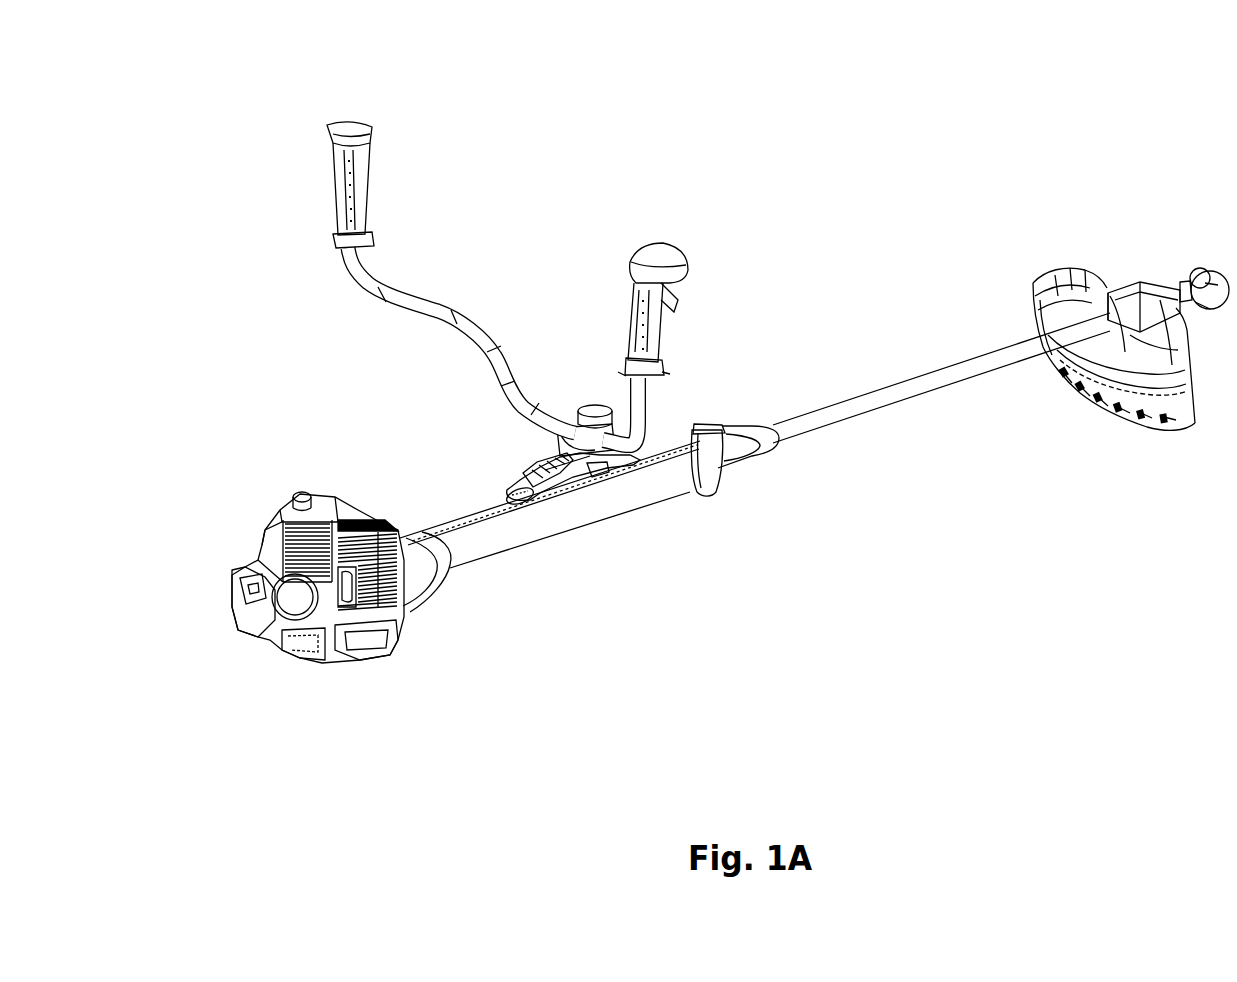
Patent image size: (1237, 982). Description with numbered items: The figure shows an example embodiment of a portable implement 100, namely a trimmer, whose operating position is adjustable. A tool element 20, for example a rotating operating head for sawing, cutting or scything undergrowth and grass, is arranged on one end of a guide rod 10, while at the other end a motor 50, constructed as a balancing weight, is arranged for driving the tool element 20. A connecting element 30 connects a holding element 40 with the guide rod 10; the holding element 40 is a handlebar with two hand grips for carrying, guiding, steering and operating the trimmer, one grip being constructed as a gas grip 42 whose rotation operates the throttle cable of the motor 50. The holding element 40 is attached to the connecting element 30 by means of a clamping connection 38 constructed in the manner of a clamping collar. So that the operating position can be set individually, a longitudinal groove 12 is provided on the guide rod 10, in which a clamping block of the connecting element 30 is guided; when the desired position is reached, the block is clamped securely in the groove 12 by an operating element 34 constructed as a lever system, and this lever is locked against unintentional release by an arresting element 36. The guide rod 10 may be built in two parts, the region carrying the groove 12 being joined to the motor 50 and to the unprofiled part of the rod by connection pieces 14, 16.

The portable implement 100 is at (997, 92).
The guide rod 10 is at (882, 382).
The longitudinal groove 12 is at (655, 449).
The connection piece 14 is at (425, 599).
The connection piece 16 is at (747, 480).
The tool element 20 is at (1140, 434).
The connecting element 30 is at (524, 461).
The operating element 34 is at (522, 483).
The arresting element 36 is at (506, 497).
The clamping connection 38 is at (560, 400).
The holding element 40 is at (420, 296).
The gas grip 42 is at (683, 262).
The motor 50 is at (296, 517).